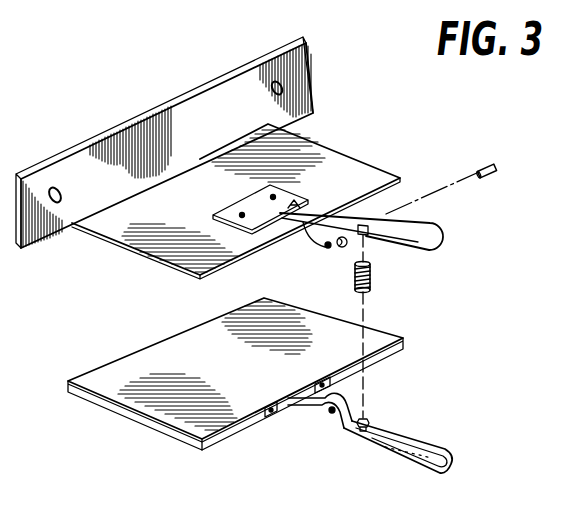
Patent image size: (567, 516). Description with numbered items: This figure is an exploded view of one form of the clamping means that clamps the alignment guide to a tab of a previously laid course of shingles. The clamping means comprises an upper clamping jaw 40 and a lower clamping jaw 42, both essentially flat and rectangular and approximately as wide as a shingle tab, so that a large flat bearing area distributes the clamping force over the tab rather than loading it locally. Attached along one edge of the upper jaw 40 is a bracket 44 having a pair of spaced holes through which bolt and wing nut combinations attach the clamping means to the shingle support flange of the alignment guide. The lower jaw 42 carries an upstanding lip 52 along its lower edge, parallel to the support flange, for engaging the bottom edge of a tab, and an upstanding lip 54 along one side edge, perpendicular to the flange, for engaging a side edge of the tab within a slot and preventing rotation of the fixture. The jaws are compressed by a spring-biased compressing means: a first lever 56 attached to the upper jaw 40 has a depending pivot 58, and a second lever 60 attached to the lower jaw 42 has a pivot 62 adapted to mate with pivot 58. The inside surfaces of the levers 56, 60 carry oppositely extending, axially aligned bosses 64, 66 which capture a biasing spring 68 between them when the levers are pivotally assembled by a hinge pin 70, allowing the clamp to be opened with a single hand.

The upper clamping jaw 40 is at (308, 147).
The lower clamping jaw 42 is at (141, 368).
The bracket 44 is at (171, 116).
The upstanding lip 52 is at (233, 426).
The upstanding lip 54 is at (140, 418).
The first lever 56 is at (442, 236).
The depending pivot 58 is at (318, 242).
The second lever 60 is at (442, 447).
The pivot 62 is at (330, 414).
The boss 64 is at (366, 226).
The boss 66 is at (367, 420).
The biasing spring 68 is at (371, 277).
The hinge pin 70 is at (491, 175).